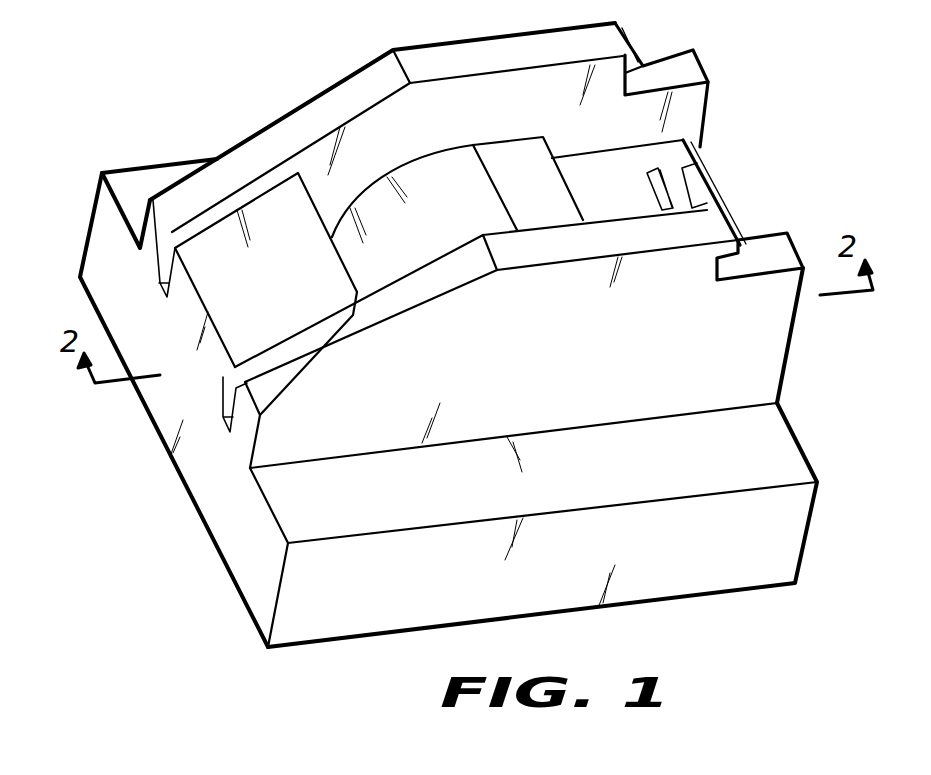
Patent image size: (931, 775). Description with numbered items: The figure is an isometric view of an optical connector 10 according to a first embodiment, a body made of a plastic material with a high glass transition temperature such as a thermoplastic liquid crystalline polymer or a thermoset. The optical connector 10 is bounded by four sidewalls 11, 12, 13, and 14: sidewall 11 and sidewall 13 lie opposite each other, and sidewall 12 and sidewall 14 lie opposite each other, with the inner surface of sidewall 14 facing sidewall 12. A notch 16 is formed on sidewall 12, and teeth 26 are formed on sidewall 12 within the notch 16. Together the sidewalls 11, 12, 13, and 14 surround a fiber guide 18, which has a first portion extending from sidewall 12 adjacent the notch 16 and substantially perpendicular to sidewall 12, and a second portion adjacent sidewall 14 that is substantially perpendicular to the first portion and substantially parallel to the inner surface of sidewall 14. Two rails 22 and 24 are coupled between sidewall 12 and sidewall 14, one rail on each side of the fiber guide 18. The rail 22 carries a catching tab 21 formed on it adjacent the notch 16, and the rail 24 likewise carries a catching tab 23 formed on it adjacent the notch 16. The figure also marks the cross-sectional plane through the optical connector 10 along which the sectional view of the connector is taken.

The optical connector 10 is at (768, 693).
The sidewall 11 is at (557, 577).
The sidewall 12 is at (800, 357).
The sidewall 13 is at (150, 160).
The sidewall 14 is at (193, 393).
The notch 16 is at (745, 153).
The fiber guide 18 is at (461, 213).
The catching tab 21 is at (738, 232).
The rail 22 is at (588, 293).
The catching tab 23 is at (637, 50).
The rail 24 is at (495, 108).
The teeth 26 is at (690, 163).